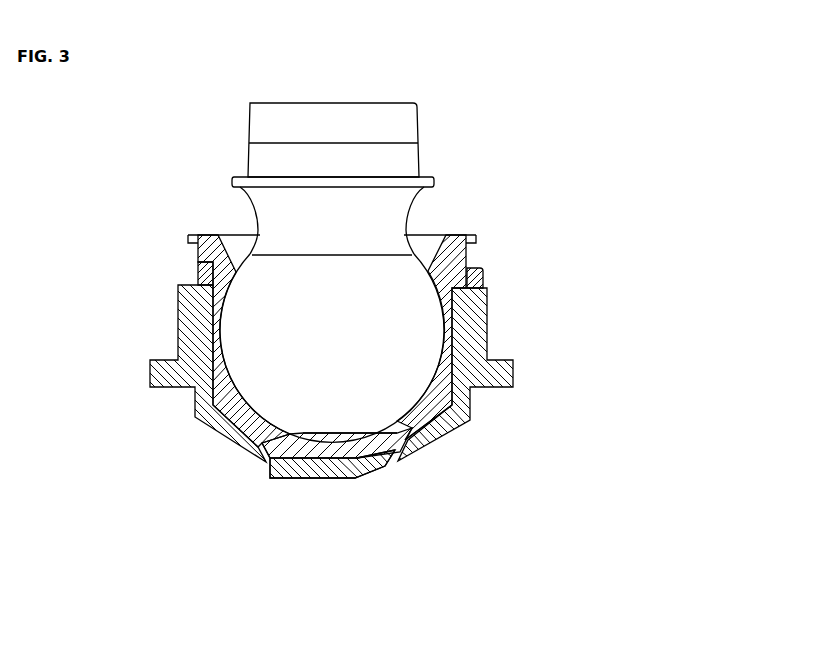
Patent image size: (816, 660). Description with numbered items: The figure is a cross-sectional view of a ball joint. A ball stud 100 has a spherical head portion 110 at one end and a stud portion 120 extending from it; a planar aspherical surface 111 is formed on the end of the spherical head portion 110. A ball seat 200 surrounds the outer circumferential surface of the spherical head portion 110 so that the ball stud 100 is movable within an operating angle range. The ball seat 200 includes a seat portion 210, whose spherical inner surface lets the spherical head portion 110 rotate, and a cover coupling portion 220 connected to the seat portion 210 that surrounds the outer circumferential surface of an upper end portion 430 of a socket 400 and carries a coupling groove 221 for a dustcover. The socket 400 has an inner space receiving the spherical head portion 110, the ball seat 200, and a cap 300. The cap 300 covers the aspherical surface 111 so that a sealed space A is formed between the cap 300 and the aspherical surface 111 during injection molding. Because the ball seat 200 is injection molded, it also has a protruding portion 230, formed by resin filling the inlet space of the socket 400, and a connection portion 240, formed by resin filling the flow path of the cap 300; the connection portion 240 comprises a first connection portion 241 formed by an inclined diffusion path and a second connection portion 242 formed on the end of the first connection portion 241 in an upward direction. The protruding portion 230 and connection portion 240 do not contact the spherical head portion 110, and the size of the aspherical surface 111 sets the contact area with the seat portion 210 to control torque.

The ball stud 100 is at (58, 133).
The spherical head portion 110 is at (238, 327).
The aspherical surface 111 is at (282, 430).
The stud portion 120 is at (258, 129).
The ball seat 200 is at (603, 133).
The seat portion 210 is at (488, 320).
The cover coupling portion 220 is at (470, 261).
The coupling groove 221 is at (332, 239).
The protruding portion 230 is at (335, 480).
The connection portion 240 is at (320, 565).
The first connection portion 241 is at (297, 463).
The second connection portion 242 is at (257, 450).
The cap 300 is at (270, 458).
The socket 400 is at (440, 425).
The upper end portion 430 is at (203, 266).
The sealed space A is at (378, 468).